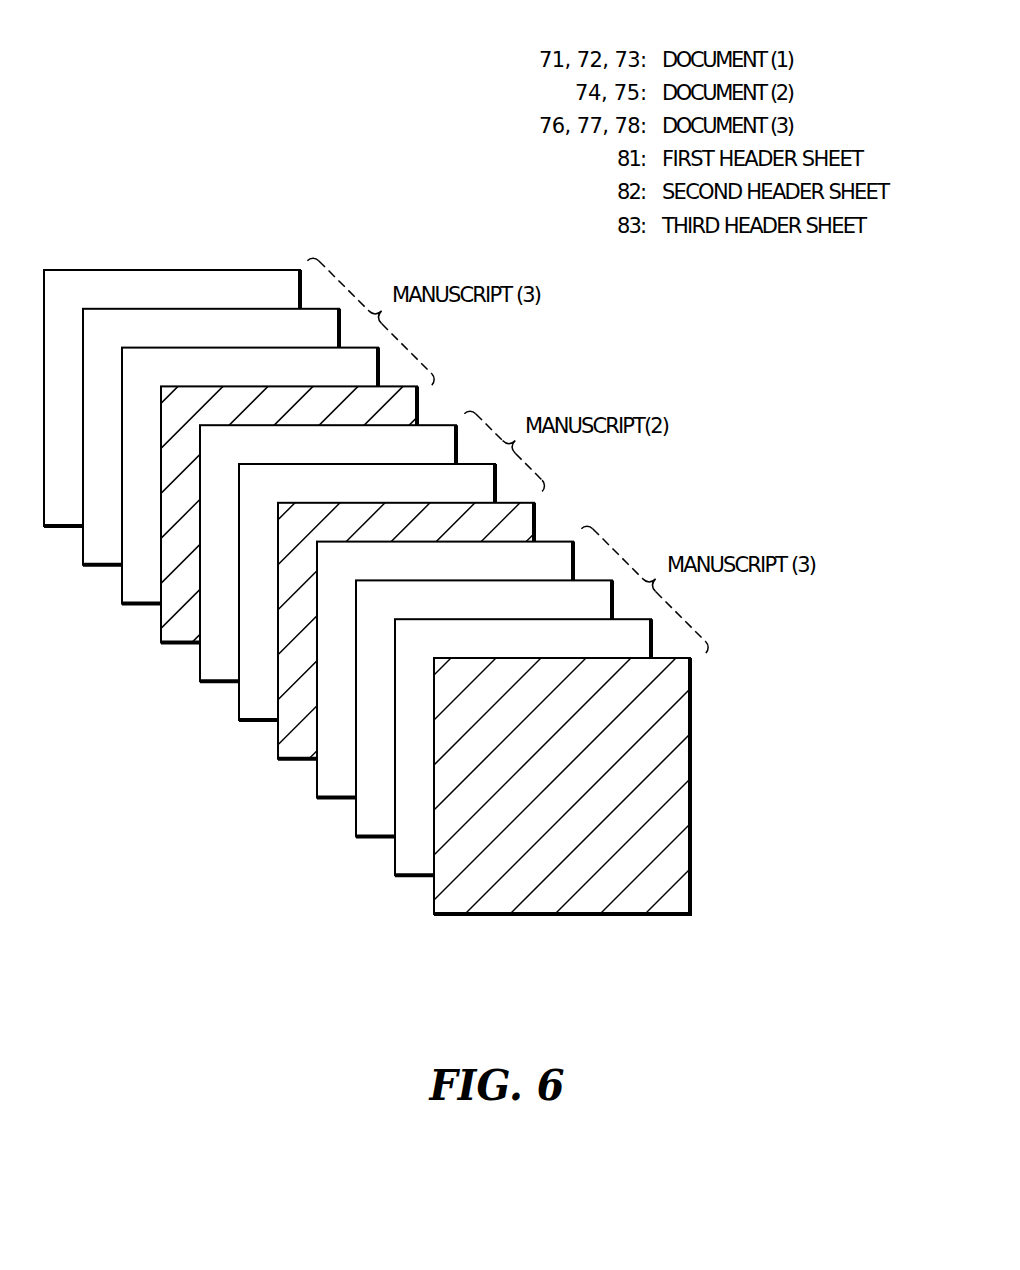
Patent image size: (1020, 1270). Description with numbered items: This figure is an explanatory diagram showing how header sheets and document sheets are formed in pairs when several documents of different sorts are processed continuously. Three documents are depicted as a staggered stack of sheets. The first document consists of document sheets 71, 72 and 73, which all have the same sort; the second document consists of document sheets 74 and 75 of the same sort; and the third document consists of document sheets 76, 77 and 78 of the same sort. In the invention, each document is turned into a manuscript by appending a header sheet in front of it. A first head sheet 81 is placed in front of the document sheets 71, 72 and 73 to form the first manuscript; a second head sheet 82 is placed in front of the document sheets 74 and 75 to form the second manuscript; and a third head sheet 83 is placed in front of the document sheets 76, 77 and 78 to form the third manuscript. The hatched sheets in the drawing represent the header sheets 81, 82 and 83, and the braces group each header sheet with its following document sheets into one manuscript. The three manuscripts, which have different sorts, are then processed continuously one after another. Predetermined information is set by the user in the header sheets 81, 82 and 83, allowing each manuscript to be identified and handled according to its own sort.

The document sheet 71 is at (523, 747).
The document sheet 72 is at (484, 708).
The document sheet 73 is at (445, 670).
The document sheet 74 is at (367, 592).
The document sheet 75 is at (328, 553).
The document sheet 76 is at (250, 476).
The document sheet 77 is at (211, 437).
The document sheet 78 is at (172, 398).
The first head sheet 81 is at (562, 786).
The second head sheet 82 is at (406, 631).
The third head sheet 83 is at (289, 514).